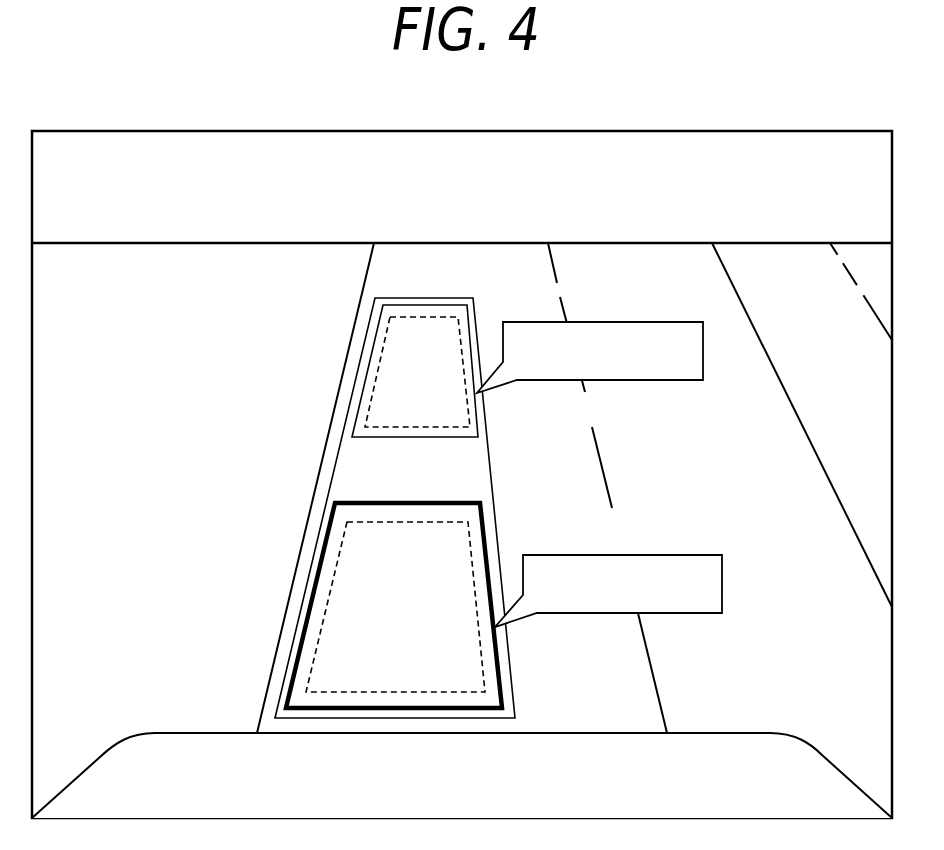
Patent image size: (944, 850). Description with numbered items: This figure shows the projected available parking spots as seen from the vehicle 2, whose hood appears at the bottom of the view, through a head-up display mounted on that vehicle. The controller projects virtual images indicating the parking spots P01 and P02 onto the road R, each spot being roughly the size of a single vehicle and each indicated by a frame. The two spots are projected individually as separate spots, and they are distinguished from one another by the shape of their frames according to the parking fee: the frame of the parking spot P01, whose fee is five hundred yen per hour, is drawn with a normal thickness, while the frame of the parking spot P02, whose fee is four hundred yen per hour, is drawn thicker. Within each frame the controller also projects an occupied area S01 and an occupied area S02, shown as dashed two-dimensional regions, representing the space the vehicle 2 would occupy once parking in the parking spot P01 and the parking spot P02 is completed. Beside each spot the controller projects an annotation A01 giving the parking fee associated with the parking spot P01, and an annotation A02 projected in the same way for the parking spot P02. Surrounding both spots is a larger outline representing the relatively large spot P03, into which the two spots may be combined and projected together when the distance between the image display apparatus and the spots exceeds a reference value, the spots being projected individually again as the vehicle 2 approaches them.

The road R is at (480, 268).
The vehicle 2 is at (747, 753).
The parking spot P01 is at (375, 343).
The parking spot P02 is at (318, 572).
The relatively large spot P03 is at (492, 468).
The occupied area S01 is at (368, 405).
The occupied area S02 is at (317, 644).
The annotation A01 is at (632, 322).
The annotation A02 is at (683, 613).